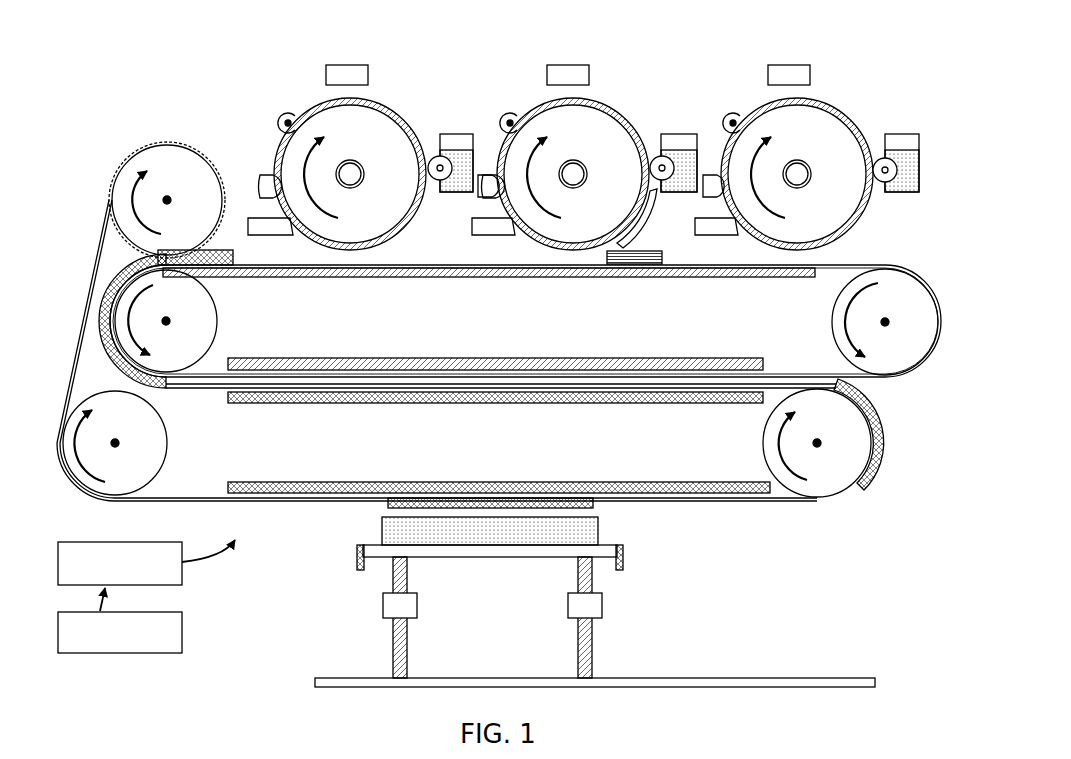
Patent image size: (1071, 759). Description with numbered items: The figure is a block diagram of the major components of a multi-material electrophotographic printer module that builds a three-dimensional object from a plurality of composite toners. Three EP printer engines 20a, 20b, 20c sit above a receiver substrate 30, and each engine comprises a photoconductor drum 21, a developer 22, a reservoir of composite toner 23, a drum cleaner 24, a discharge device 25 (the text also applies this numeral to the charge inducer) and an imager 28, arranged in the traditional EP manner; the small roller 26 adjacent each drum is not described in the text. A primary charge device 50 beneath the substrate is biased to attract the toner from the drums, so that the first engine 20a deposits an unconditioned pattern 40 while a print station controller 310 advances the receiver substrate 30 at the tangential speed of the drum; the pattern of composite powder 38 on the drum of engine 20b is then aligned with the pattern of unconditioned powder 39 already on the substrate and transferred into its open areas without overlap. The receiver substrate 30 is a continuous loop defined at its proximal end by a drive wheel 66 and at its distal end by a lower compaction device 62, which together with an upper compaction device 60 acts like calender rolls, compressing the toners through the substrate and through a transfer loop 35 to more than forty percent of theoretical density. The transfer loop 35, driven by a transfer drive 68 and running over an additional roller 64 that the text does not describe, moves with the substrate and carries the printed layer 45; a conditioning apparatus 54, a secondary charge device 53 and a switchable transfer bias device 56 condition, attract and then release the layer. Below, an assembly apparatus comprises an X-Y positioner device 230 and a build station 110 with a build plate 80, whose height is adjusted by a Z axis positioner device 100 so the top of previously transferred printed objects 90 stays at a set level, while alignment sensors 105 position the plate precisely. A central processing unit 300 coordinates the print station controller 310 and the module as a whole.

The EP printer engine 20a is at (862, 92).
The EP printer engine 20b is at (579, 142).
The EP printer engine 20c is at (291, 78).
The photoconductor drum 21 is at (593, 100).
The developer 22 is at (672, 118).
The reservoir of composite toner 23 is at (692, 157).
The drum cleaner 24 is at (497, 228).
The discharge device 25 is at (487, 195).
The cleaning roller 26 is at (497, 110).
The imager 28 is at (568, 63).
The receiver substrate 30 is at (845, 265).
The transfer loop 35 is at (98, 250).
The pattern of composite powder 38 is at (632, 230).
The pattern of unconditioned powder 39 is at (662, 253).
The unconditioned pattern 40 is at (235, 253).
The printed layer 45 is at (882, 430).
The primary charge device 50 is at (495, 278).
The secondary charge device 53 is at (375, 400).
The conditioning apparatus 54 is at (650, 358).
The transfer bias device 56 is at (458, 483).
The upper compaction device 60 is at (167, 160).
The lower compaction device 62 is at (215, 330).
The roller 64 is at (170, 440).
The drive wheel 66 is at (843, 330).
The transfer drive 68 is at (770, 453).
The build plate 80 is at (530, 553).
The previously transferred printed objects 90 is at (383, 530).
The Z axis positioner device 100 is at (580, 640).
The alignment sensor 105 is at (358, 565).
The build station 110 is at (573, 611).
The X-Y positioner device 230 is at (630, 678).
The central processing unit 300 is at (182, 630).
The print station controller 310 is at (182, 580).